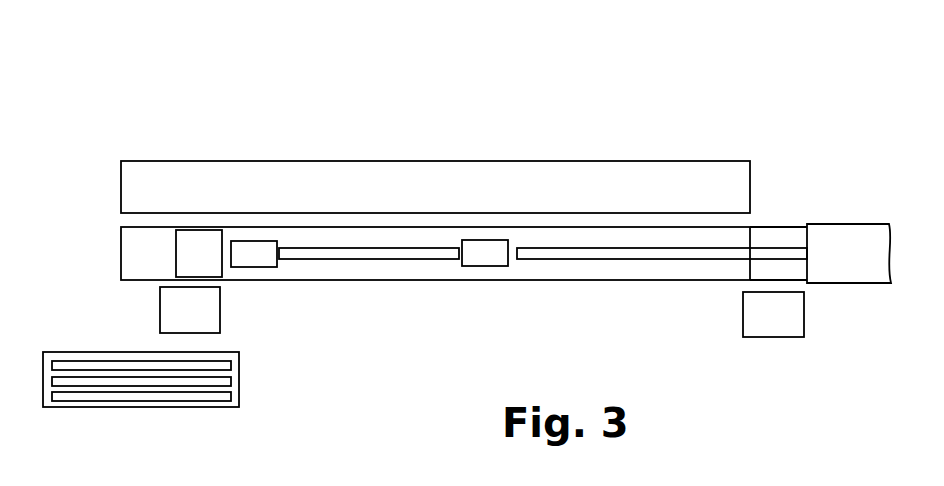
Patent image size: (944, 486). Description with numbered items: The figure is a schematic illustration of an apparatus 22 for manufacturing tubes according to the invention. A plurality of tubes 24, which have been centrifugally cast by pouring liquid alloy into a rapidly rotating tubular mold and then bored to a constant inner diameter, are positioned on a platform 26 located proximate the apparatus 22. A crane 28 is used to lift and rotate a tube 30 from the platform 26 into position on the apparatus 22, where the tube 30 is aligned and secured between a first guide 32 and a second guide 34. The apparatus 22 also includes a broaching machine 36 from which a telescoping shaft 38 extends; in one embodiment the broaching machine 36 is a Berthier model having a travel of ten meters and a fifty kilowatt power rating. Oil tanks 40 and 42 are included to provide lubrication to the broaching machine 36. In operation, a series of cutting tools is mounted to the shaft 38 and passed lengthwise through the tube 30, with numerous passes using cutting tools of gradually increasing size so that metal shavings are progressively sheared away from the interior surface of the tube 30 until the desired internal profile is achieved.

The apparatus 22 is at (328, 106).
The tubes 24 is at (143, 395).
The platform 26 is at (106, 352).
The crane 28 is at (205, 250).
The tube 30 is at (410, 252).
The first guide 32 is at (257, 250).
The second guide 34 is at (498, 256).
The broaching machine 36 is at (851, 235).
The telescoping shaft 38 is at (623, 255).
The oil tank 40 is at (643, 170).
The oil tank 42 is at (776, 236).